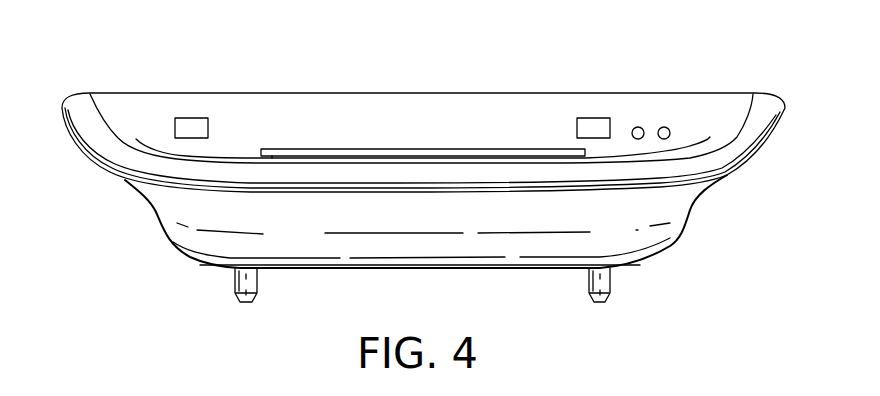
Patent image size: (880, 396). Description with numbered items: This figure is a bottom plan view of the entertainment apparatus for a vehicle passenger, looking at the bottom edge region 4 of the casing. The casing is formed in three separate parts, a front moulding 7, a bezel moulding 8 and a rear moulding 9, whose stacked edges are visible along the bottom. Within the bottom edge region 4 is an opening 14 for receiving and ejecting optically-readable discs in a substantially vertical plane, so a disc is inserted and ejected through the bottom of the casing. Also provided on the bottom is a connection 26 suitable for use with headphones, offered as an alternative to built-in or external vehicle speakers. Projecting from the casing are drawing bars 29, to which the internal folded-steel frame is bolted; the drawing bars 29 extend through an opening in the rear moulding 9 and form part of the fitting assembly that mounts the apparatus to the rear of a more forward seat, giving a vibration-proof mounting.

The bottom edge region 4 is at (455, 107).
The front moulding 7 is at (118, 110).
The bezel moulding 8 is at (100, 150).
The rear moulding 9 is at (420, 246).
The opening 14 is at (355, 152).
The connection 26 is at (665, 127).
The drawing bars 29 is at (612, 278).